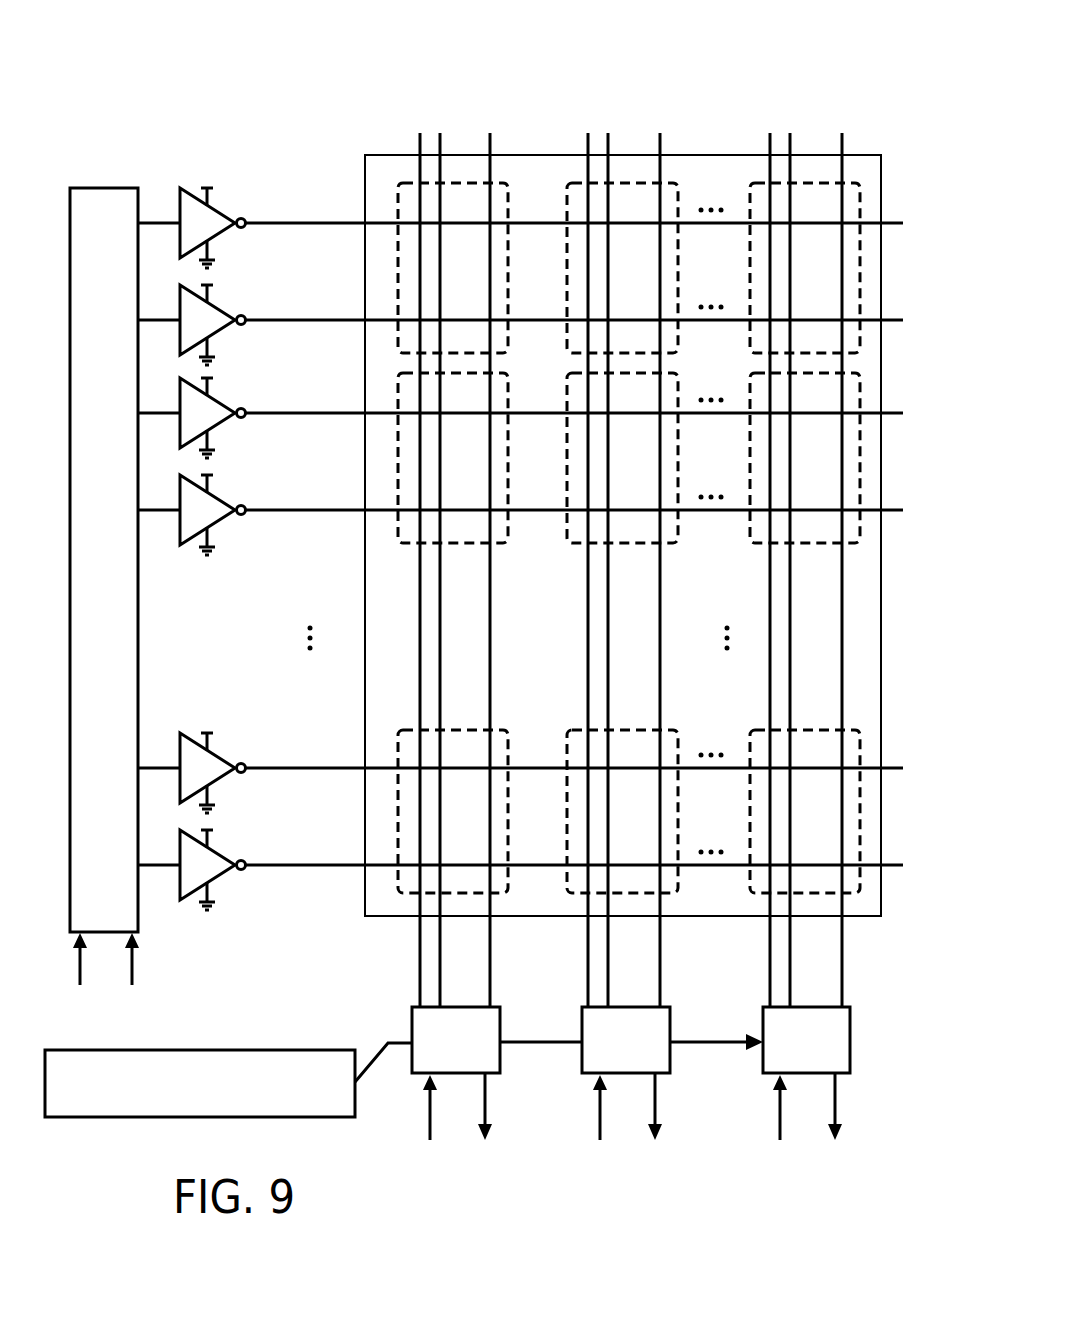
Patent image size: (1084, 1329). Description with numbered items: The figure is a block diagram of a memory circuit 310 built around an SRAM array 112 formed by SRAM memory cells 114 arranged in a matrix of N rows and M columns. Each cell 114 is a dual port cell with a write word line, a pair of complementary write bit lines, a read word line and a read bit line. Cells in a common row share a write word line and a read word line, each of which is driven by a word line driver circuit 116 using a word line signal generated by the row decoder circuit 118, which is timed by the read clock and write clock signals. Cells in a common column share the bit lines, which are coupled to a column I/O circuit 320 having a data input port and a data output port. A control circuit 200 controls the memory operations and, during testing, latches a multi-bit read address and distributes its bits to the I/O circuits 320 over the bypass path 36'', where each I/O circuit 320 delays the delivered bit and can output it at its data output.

The memory circuit 310 is at (316, 84).
The row decoder circuit 118 is at (110, 188).
The word line driver circuit 116 is at (186, 188).
The SRAM array 112 is at (366, 592).
The SRAM memory cell 114 is at (458, 183).
The I/O circuit 320 is at (851, 1035).
The control circuit 200 is at (276, 1050).
The bypass path 36'' is at (379, 1023).